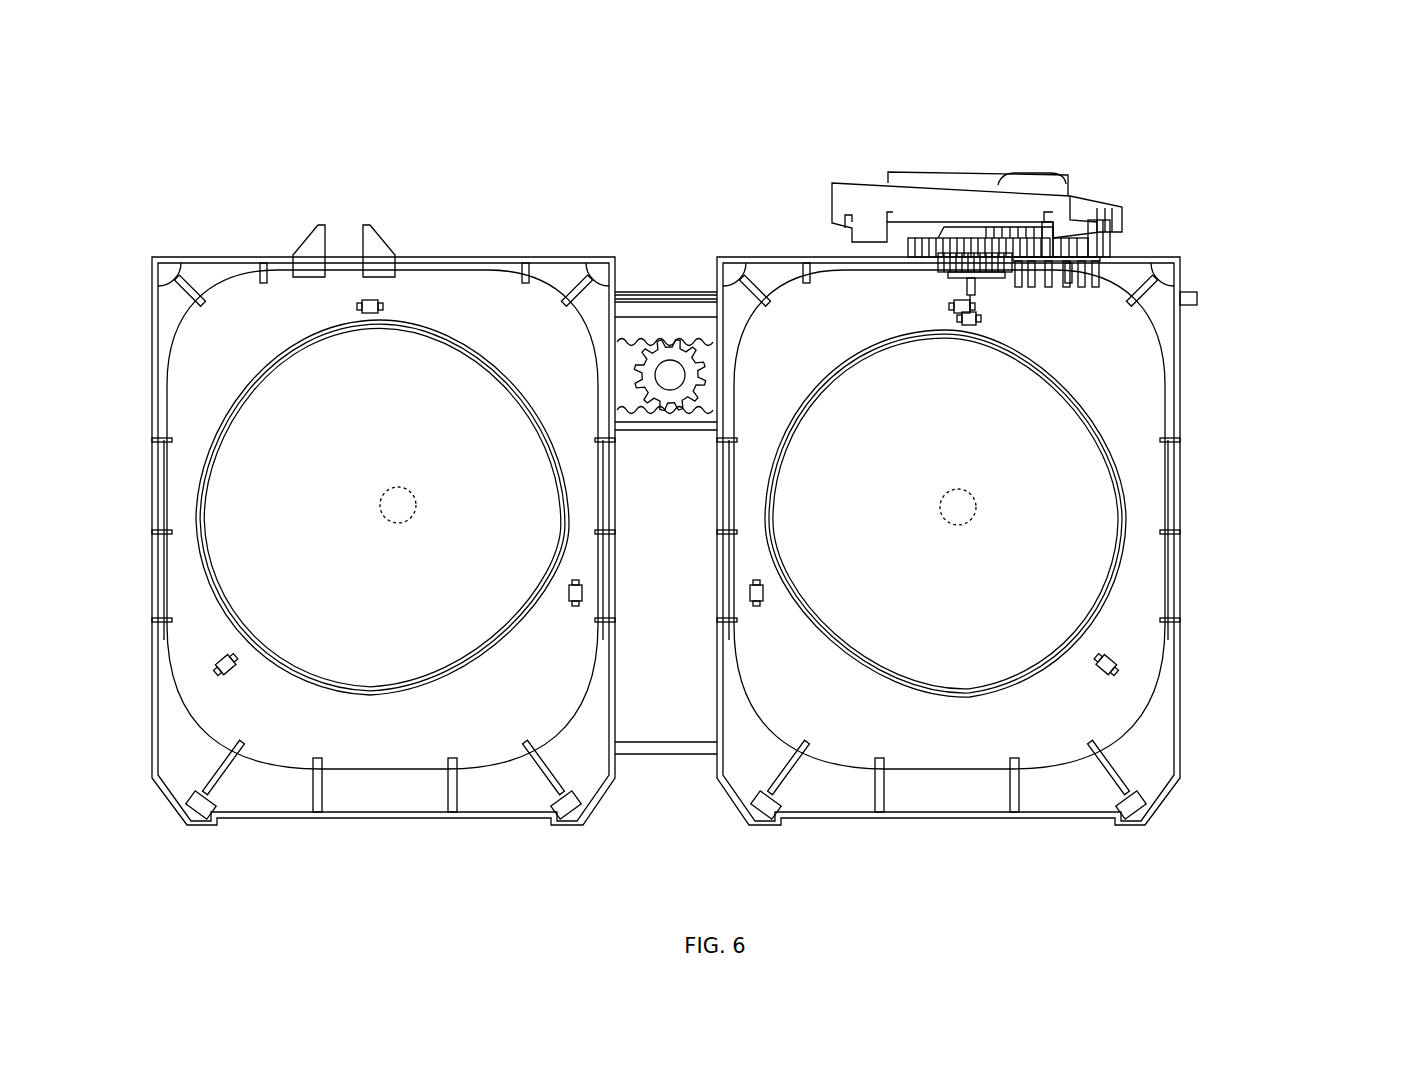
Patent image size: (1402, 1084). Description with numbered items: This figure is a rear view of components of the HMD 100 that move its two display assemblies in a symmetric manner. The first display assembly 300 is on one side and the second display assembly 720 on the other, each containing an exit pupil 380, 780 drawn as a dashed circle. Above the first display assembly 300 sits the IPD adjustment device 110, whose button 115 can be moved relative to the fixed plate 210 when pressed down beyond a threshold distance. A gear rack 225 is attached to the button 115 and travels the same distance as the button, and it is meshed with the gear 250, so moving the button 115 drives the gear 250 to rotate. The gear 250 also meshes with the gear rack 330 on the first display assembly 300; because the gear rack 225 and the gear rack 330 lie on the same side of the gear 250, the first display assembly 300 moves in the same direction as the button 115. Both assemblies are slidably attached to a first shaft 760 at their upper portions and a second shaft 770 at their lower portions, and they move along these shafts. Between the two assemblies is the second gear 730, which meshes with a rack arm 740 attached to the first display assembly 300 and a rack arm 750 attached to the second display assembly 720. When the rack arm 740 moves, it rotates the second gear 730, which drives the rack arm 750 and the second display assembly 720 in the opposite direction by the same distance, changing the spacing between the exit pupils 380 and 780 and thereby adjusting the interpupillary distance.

The HMD 100 is at (777, 67).
The IPD adjustment device 110 is at (832, 242).
The button 115 is at (1047, 175).
The fixed plate 210 is at (960, 176).
The gear rack 225 is at (1107, 250).
The gear 250 is at (993, 278).
The first display assembly 300 is at (1137, 487).
The gear rack 330 is at (1098, 280).
The exit pupil 380 is at (950, 502).
The second display assembly 720 is at (182, 375).
The second gear 730 is at (672, 400).
The rack arm 740 is at (712, 345).
The rack arm 750 is at (617, 413).
The first shaft 760 is at (668, 302).
The second shaft 770 is at (660, 748).
The exit pupil 780 is at (378, 503).